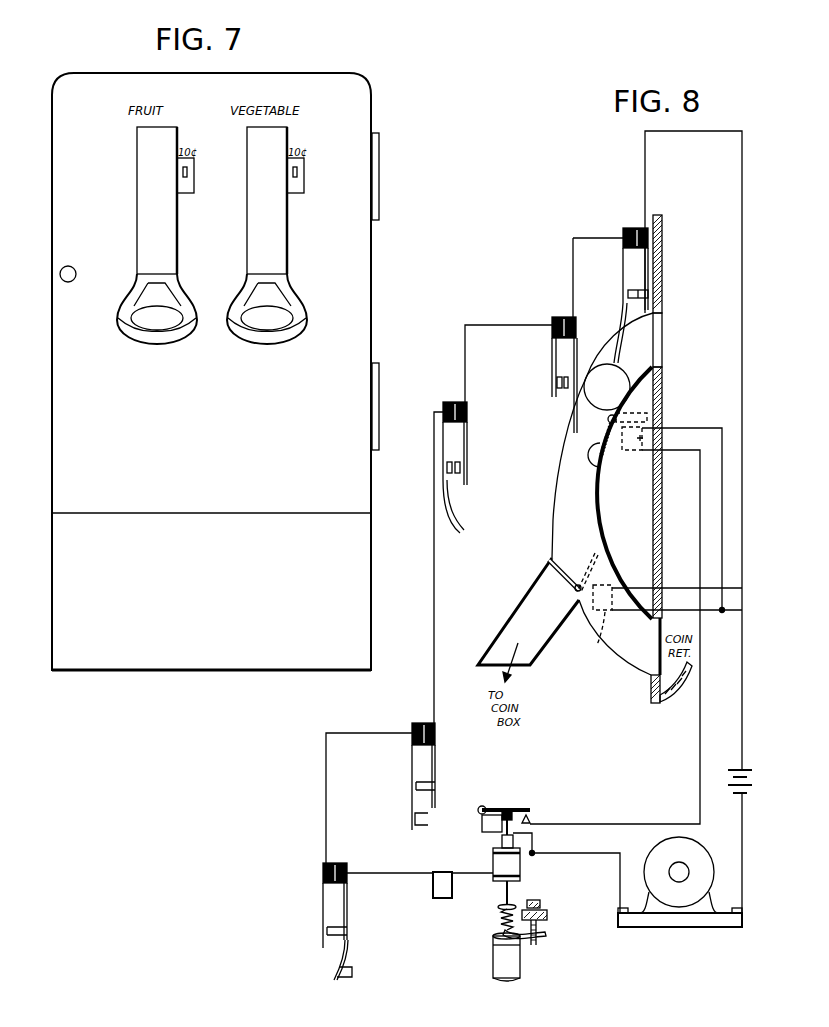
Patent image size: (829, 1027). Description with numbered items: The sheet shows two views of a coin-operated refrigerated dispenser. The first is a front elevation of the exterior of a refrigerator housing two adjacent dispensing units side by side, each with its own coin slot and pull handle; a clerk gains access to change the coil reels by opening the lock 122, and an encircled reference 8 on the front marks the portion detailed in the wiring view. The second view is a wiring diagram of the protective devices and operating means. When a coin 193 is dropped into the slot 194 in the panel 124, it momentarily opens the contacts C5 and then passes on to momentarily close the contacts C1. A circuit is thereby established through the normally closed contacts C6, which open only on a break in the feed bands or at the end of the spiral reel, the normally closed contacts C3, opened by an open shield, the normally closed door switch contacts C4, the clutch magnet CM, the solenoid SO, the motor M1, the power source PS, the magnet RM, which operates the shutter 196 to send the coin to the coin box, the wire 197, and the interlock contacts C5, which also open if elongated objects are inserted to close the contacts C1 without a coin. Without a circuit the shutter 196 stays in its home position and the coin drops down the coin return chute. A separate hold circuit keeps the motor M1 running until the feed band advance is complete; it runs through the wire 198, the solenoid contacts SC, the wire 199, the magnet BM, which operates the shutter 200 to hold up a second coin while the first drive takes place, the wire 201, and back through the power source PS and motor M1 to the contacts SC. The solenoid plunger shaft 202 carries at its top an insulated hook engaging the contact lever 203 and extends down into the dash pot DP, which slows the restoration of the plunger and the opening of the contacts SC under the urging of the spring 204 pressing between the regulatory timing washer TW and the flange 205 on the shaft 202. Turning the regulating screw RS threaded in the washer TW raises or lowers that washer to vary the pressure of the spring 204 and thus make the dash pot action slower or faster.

In FIG. 7, the lock 122 is at (62, 280).
In FIG. 7, the section indicator for FIG. 8 is at (68, 274).
In FIG. 8, the panel 124 is at (663, 246).
In FIG. 8, the coin 193 is at (607, 387).
In FIG. 8, the slot 194 is at (660, 343).
In FIG. 8, the shutter 196 is at (556, 568).
In FIG. 8, the wire 197 is at (742, 252).
In FIG. 8, the wire 198 is at (482, 827).
In FIG. 8, the wire 199 is at (700, 742).
In FIG. 8, the shutter 200 is at (597, 470).
In FIG. 8, the wire 201 is at (722, 496).
In FIG. 8, the solenoid plunger shaft 202 is at (505, 893).
In FIG. 8, the contact lever 203 is at (483, 807).
In FIG. 8, the spring 204 is at (497, 924).
In FIG. 8, the flange 205 is at (498, 908).
In FIG. 8, the contacts C1 is at (552, 372).
In FIG. 8, the normally closed contacts C3 is at (425, 778).
In FIG. 8, the normally closed door switch contacts C4 is at (323, 925).
In FIG. 8, the normally closed interlock contacts C5 is at (633, 283).
In FIG. 8, the normally closed contacts C6 is at (453, 470).
In FIG. 8, the magnet BM is at (648, 433).
In FIG. 8, the magnet RM is at (657, 623).
In FIG. 8, the solenoid contacts SC is at (535, 817).
In FIG. 8, the solenoid SO is at (522, 866).
In FIG. 8, the clutch magnet CM is at (433, 891).
In FIG. 8, the regulating screw RS is at (552, 919).
In FIG. 8, the regulatory timing washer TW is at (547, 932).
In FIG. 8, the dash pot DP is at (518, 958).
In FIG. 8, the power source PS is at (745, 777).
In FIG. 8, the motor M1 is at (680, 882).